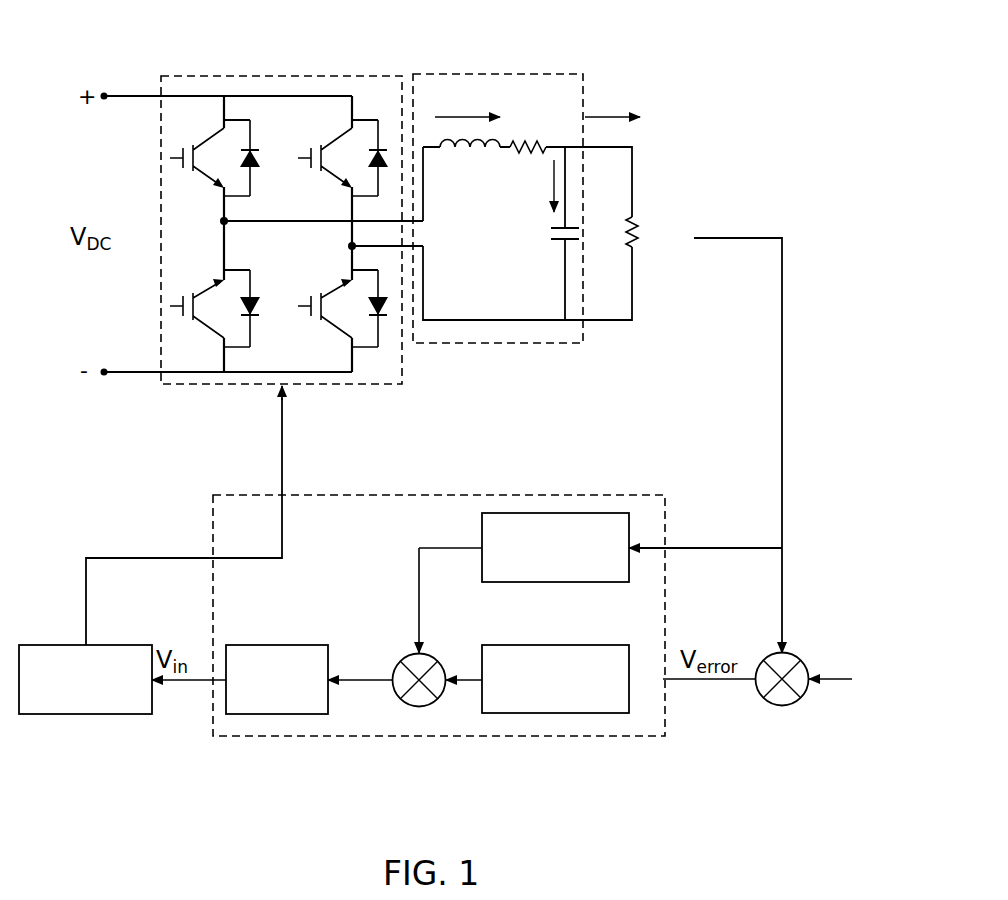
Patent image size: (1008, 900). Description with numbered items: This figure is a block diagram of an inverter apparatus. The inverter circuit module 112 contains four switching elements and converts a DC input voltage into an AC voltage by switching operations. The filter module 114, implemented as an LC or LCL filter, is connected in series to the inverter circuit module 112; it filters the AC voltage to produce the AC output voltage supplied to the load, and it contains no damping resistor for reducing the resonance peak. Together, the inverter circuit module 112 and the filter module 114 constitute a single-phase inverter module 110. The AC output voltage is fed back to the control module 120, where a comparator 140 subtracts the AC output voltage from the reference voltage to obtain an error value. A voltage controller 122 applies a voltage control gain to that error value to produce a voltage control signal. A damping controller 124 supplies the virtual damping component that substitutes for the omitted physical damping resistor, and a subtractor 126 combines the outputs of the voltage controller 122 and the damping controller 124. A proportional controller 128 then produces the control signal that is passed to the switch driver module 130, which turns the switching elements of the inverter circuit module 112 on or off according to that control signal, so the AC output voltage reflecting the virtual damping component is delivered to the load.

The single-phase inverter module 110 is at (421, 195).
The inverter circuit module 112 is at (288, 76).
The filter module 114 is at (483, 74).
The control module 120 is at (545, 495).
The voltage controller 122 is at (582, 713).
The damping controller 124 is at (613, 513).
The subtractor 126 is at (419, 706).
The proportional controller 128 is at (277, 714).
The switch driver module 130 is at (80, 714).
The comparator 140 is at (777, 706).